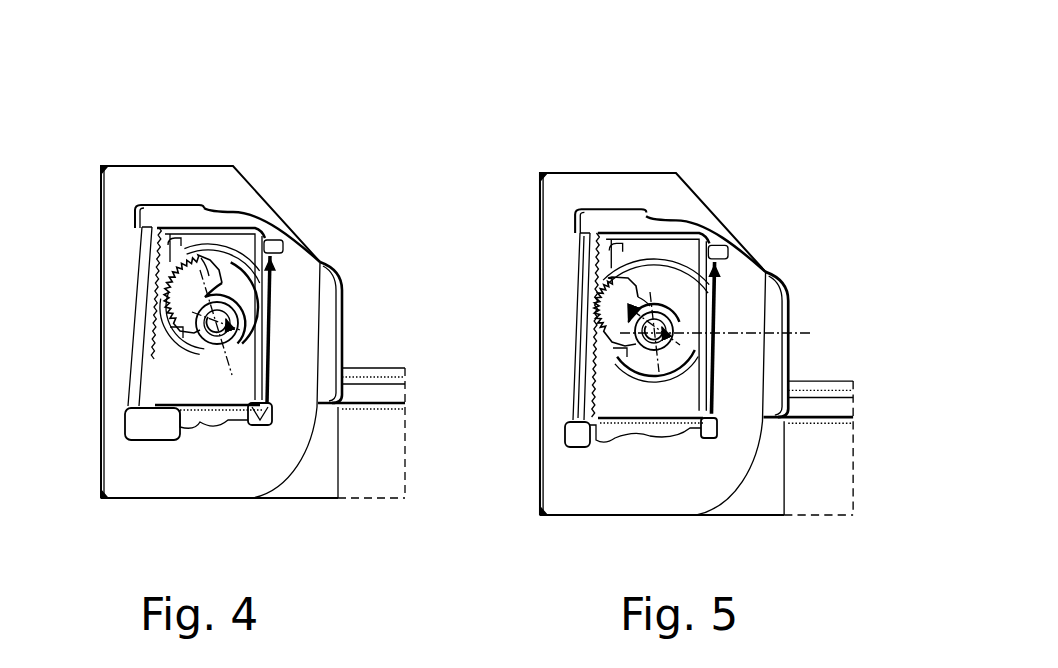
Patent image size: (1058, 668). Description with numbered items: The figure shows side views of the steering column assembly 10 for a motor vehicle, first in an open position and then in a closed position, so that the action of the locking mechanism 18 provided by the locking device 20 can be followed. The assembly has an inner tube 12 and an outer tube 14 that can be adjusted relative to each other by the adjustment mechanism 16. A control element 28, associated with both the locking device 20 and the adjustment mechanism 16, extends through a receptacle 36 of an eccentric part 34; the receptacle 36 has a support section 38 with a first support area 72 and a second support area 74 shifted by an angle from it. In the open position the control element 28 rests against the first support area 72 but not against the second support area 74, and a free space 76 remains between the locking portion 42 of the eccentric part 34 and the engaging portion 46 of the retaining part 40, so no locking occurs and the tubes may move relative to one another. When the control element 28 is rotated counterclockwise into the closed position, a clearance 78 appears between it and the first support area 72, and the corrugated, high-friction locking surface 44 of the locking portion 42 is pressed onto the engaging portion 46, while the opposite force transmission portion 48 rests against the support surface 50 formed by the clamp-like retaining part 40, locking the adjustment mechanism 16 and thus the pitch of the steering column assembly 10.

In FIG. 4, the steering column assembly 10 is at (110, 78).
In FIG. 5, the steering column assembly 10 is at (556, 137).
In FIG. 4, the inner tube 12 is at (383, 477).
In FIG. 5, the inner tube 12 is at (830, 477).
In FIG. 4, the outer tube 14 is at (325, 483).
In FIG. 5, the outer tube 14 is at (772, 493).
In FIG. 4, the adjustment mechanism 16 is at (259, 84).
In FIG. 4, the locking mechanism 18 is at (168, 78).
In FIG. 5, the locking mechanism 18 is at (714, 147).
In FIG. 4, the locking device 20 is at (198, 84).
In FIG. 5, the locking device 20 is at (805, 190).
In FIG. 4, the control element 28 is at (316, 330).
In FIG. 5, the control element 28 is at (697, 305).
In FIG. 4, the eccentric part 34 is at (250, 290).
In FIG. 5, the eccentric part 34 is at (675, 292).
In FIG. 4, the receptacle 36 is at (208, 408).
In FIG. 5, the receptacle 36 is at (645, 425).
In FIG. 4, the support section 38 is at (340, 290).
In FIG. 5, the support section 38 is at (676, 280).
In FIG. 4, the retaining part 40 is at (153, 257).
In FIG. 5, the retaining part 40 is at (583, 245).
In FIG. 4, the locking portion 42 is at (232, 296).
In FIG. 5, the locking portion 42 is at (625, 262).
In FIG. 4, the locking surface 44 is at (187, 251).
In FIG. 4, the engaging portion 46 is at (148, 287).
In FIG. 5, the engaging portion 46 is at (588, 273).
In FIG. 4, the force transmission portion 48 is at (238, 380).
In FIG. 5, the force transmission portion 48 is at (716, 410).
In FIG. 4, the support surface 50 is at (286, 244).
In FIG. 5, the support surface 50 is at (705, 354).
In FIG. 4, the first support area 72 is at (188, 310).
In FIG. 5, the first support area 72 is at (648, 410).
In FIG. 4, the second support area 74 is at (172, 335).
In FIG. 4, the free space 76 is at (161, 246).
In FIG. 5, the clearance 78 is at (620, 350).